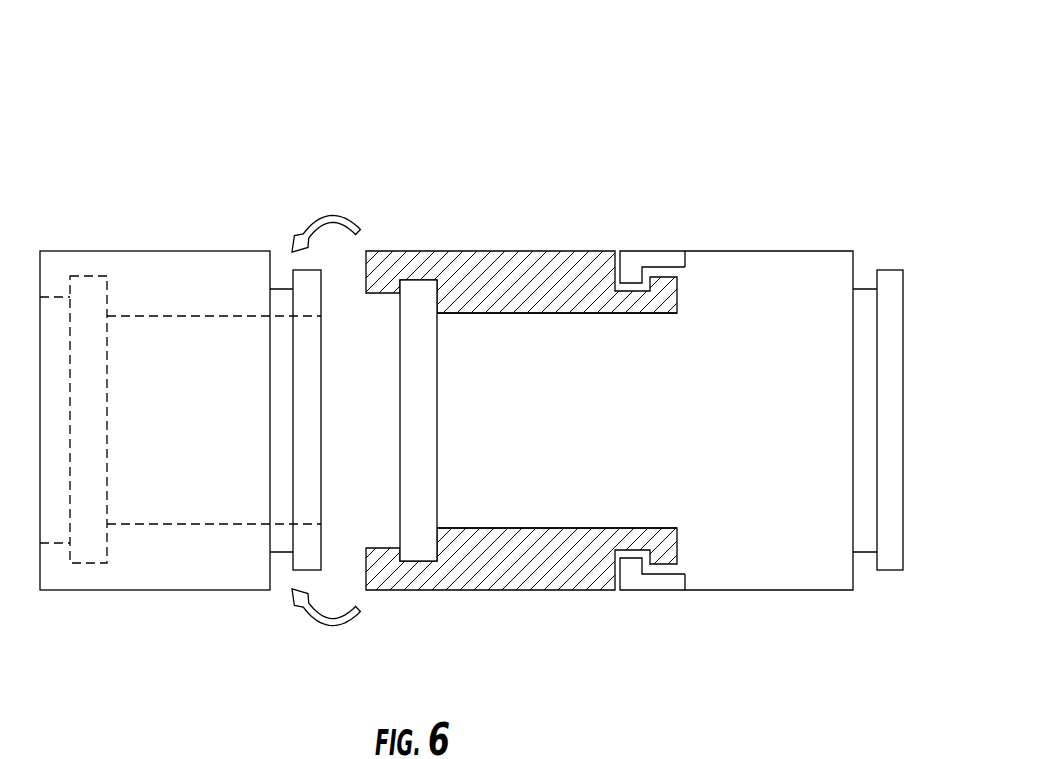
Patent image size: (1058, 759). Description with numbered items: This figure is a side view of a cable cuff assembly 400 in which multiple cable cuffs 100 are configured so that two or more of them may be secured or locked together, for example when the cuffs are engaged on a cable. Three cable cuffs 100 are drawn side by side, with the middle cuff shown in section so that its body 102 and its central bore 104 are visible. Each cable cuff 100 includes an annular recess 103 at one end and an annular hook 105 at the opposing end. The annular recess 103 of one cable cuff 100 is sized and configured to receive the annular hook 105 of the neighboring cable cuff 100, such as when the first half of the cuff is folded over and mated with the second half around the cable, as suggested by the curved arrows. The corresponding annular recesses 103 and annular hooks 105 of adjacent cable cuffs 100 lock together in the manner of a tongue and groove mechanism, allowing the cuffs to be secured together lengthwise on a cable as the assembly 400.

The cable cuff assembly 400 is at (777, 125).
The cable cuff 100 is at (810, 712).
The sleeve body 102 is at (510, 277).
The annular recess 103 is at (280, 258).
The bore 104 is at (527, 457).
The annular hook 105 is at (392, 277).